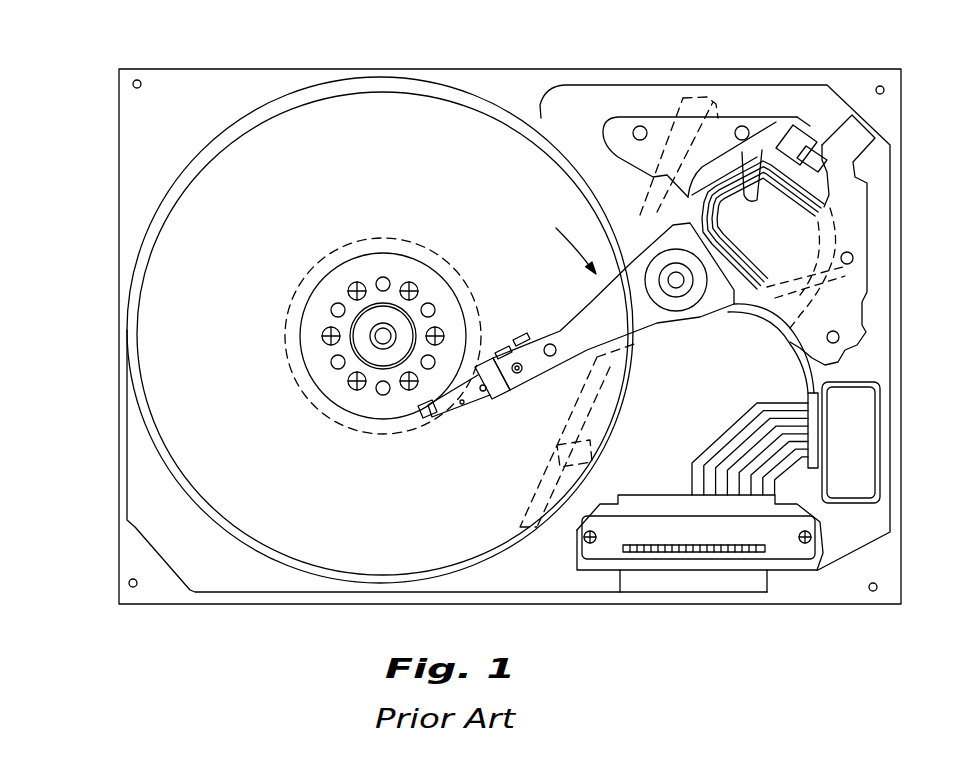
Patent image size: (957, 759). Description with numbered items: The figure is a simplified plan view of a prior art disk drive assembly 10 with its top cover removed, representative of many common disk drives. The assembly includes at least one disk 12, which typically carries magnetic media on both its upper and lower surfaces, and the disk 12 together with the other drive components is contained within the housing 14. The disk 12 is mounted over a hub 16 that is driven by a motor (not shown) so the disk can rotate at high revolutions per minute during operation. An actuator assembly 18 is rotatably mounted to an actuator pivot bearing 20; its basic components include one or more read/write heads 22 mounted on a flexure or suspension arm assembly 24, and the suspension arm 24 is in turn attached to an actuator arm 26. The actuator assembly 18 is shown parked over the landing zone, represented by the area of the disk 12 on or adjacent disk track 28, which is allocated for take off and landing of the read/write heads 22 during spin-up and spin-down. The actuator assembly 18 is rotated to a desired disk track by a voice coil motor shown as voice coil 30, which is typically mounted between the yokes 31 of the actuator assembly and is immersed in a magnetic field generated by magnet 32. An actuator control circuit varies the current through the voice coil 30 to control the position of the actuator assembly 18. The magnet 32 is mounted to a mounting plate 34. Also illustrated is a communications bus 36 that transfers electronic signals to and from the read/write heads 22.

The disk drive assembly 10 is at (76, 101).
The disk 12 is at (246, 227).
The housing 14 is at (775, 98).
The hub 16 is at (389, 330).
The actuator assembly 18 is at (556, 235).
The actuator pivot bearing 20 is at (664, 270).
The read/write heads 22 is at (428, 420).
The suspension arm assembly 24 is at (482, 402).
The actuator arm 26 is at (556, 320).
The disk track 28 is at (357, 242).
The voice coil 30 is at (825, 205).
The yokes 31 is at (745, 212).
The magnet 32 is at (722, 158).
The mounting plate 34 is at (632, 150).
The communications bus 36 is at (787, 353).